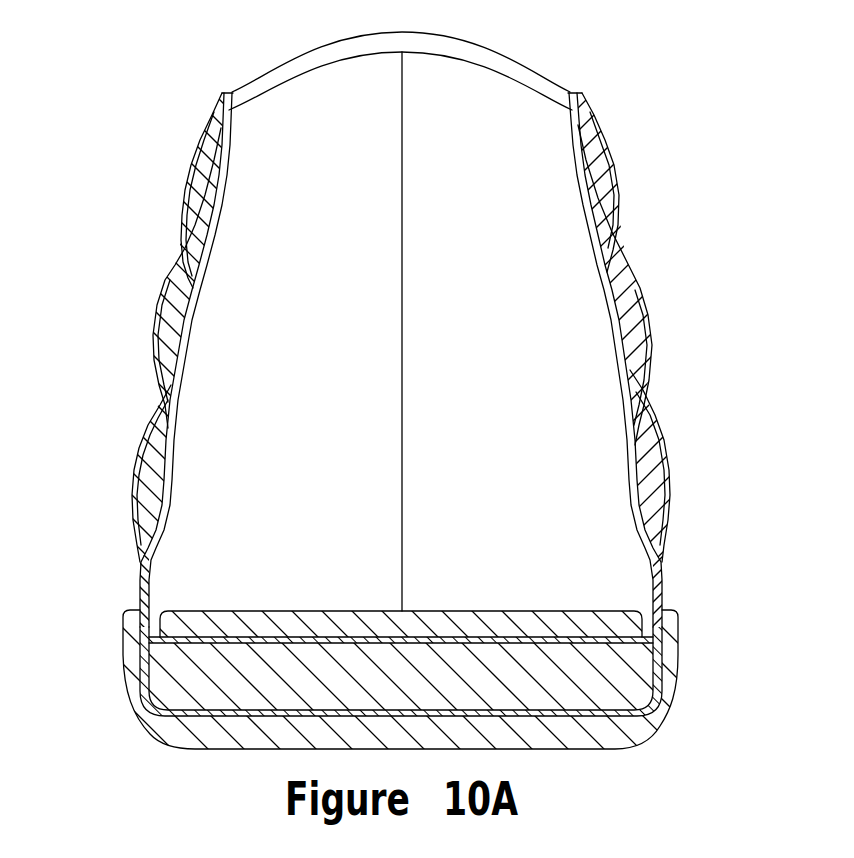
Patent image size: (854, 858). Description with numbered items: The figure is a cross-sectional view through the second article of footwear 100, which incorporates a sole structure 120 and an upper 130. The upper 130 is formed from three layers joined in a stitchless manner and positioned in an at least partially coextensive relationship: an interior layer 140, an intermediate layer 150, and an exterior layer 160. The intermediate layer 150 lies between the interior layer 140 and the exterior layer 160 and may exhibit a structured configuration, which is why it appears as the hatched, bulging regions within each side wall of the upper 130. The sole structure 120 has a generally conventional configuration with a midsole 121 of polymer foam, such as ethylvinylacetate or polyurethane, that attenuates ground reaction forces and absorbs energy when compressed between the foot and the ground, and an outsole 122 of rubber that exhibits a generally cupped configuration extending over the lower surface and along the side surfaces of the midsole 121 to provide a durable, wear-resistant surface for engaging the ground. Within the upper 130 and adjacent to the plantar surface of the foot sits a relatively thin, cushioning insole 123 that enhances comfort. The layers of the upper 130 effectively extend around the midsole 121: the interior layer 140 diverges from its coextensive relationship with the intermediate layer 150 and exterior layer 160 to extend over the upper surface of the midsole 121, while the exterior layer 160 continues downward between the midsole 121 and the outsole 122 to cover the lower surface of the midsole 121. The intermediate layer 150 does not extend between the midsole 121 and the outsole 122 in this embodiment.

The article of footwear 100 is at (163, 112).
The sole structure 120 is at (150, 736).
The midsole 121 is at (630, 668).
The outsole 122 is at (588, 738).
The insole 123 is at (493, 624).
The upper 130 is at (148, 408).
The interior layer 140 is at (220, 237).
The intermediate layer 150 is at (177, 297).
The exterior layer 160 is at (185, 235).